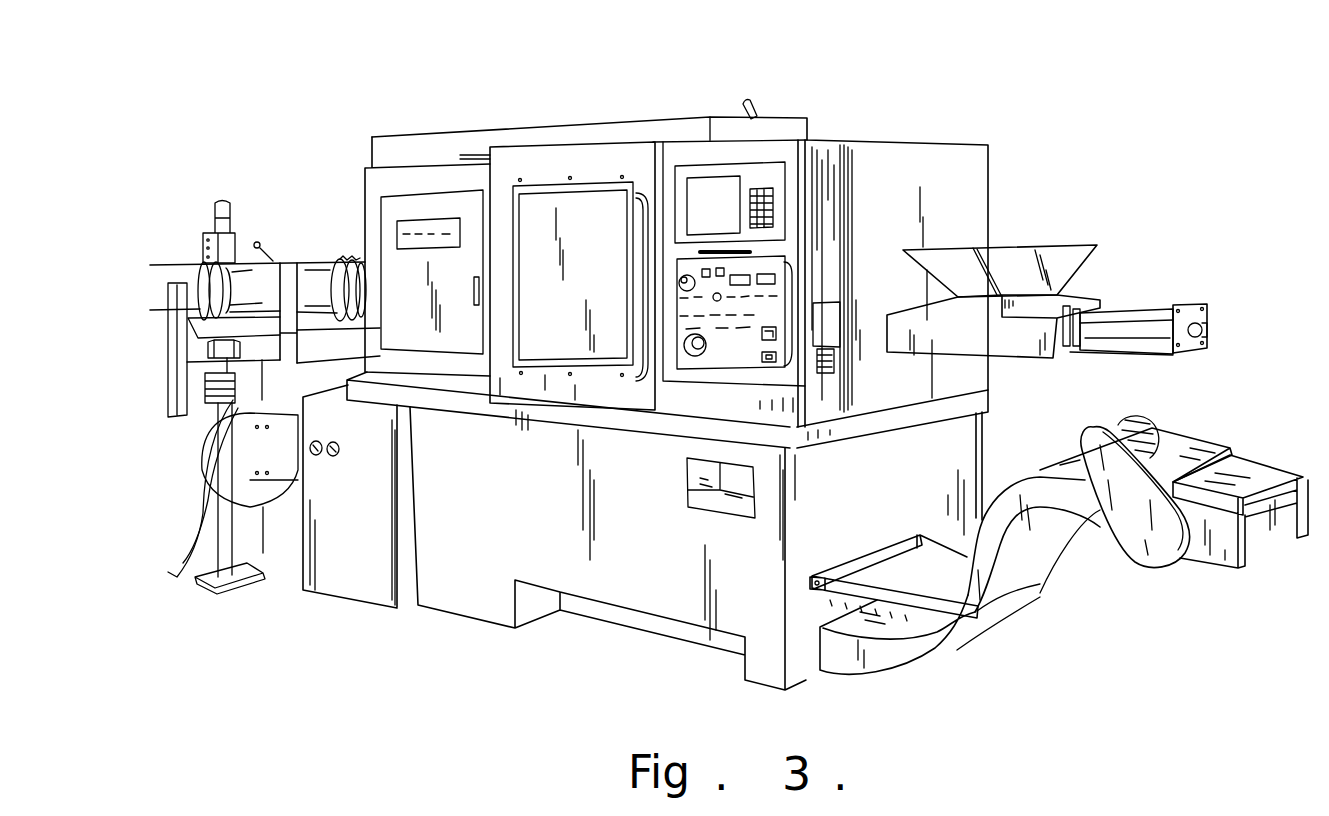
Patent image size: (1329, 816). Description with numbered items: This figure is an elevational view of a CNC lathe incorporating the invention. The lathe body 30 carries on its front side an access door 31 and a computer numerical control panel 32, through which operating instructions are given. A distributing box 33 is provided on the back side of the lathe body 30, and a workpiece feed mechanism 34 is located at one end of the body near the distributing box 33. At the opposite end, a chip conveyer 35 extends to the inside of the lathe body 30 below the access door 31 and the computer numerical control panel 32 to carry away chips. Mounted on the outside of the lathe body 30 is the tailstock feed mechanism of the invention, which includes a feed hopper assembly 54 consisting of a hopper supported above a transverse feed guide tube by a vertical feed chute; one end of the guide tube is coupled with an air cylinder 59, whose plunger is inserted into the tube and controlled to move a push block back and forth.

The lathe body 30 is at (645, 363).
The access door 31 is at (565, 163).
The computer numerical control panel 32 is at (760, 182).
The distributing box 33 is at (427, 148).
The workpiece feed mechanism 34 is at (247, 265).
The chip conveyer 35 is at (1053, 497).
The feed hopper assembly 54 is at (1082, 292).
The air cylinder 59 is at (1210, 322).